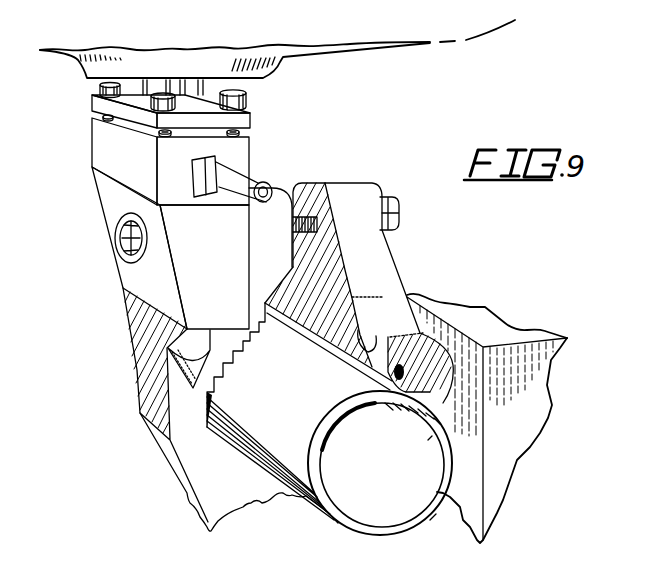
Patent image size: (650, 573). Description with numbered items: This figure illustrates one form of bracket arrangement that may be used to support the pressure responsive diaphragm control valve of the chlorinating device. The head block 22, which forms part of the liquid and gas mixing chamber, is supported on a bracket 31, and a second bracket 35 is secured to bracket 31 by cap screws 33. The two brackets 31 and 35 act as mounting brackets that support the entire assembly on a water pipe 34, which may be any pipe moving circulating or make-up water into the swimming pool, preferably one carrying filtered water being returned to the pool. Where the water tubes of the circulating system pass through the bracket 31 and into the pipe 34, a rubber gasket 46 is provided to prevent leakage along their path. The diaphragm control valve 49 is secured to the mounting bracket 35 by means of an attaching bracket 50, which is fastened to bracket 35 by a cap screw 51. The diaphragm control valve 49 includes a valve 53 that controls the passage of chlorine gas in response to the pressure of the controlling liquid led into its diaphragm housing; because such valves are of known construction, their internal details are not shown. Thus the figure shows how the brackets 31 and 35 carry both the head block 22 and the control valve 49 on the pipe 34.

The head block 22 is at (565, 410).
The bracket 31 is at (384, 271).
The cap screws 33 is at (399, 210).
The water pipe 34 is at (418, 527).
The second bracket 35 is at (268, 503).
The rubber gasket 46 is at (338, 331).
The diaphragm control valve 49 is at (282, 68).
The attaching bracket 50 is at (106, 197).
The cap screw 51 is at (127, 248).
The valve 53 is at (254, 146).